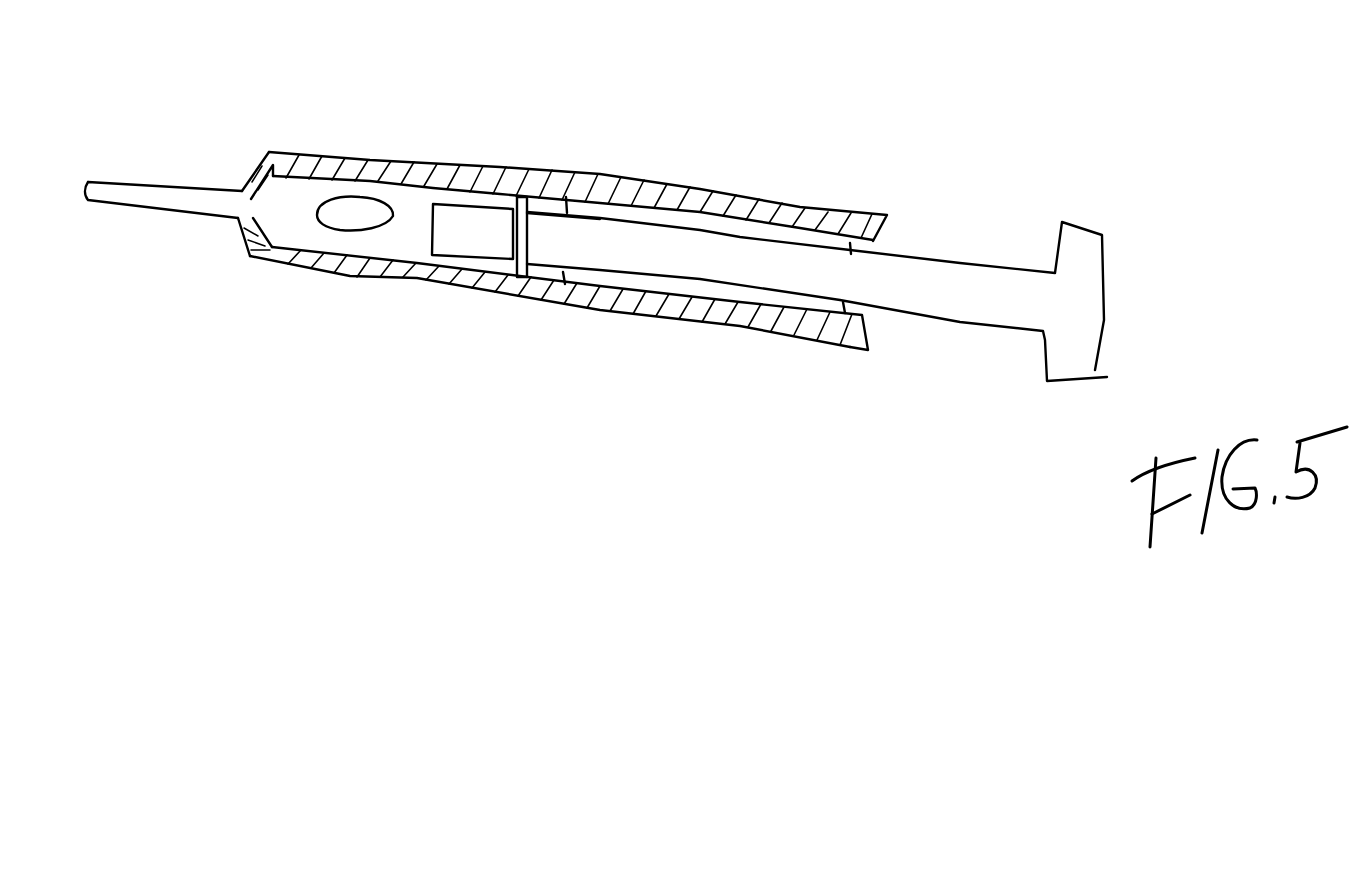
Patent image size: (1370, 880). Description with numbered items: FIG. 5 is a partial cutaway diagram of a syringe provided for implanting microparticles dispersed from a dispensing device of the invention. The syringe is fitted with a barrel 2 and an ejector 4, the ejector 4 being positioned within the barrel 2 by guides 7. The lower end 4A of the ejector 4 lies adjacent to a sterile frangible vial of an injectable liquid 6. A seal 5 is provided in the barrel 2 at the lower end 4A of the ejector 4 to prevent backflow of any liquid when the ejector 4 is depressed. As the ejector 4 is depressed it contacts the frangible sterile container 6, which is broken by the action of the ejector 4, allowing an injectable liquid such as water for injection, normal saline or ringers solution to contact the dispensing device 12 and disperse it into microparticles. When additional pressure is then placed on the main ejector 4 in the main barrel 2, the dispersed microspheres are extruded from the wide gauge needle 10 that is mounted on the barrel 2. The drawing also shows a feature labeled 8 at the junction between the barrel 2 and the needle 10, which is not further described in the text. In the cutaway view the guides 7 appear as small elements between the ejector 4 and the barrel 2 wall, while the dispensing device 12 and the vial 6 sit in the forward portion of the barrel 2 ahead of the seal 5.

The barrel 2 is at (773, 197).
The ejector 4 is at (872, 297).
The lower end of ejector 4A is at (537, 220).
The seal 5 is at (530, 267).
The frangible vial of injectable liquid 6 is at (463, 233).
The guides 7 is at (567, 210).
The neck 8 is at (242, 192).
The wide gauge needle 10 is at (147, 210).
The dispensing device 12 is at (360, 230).